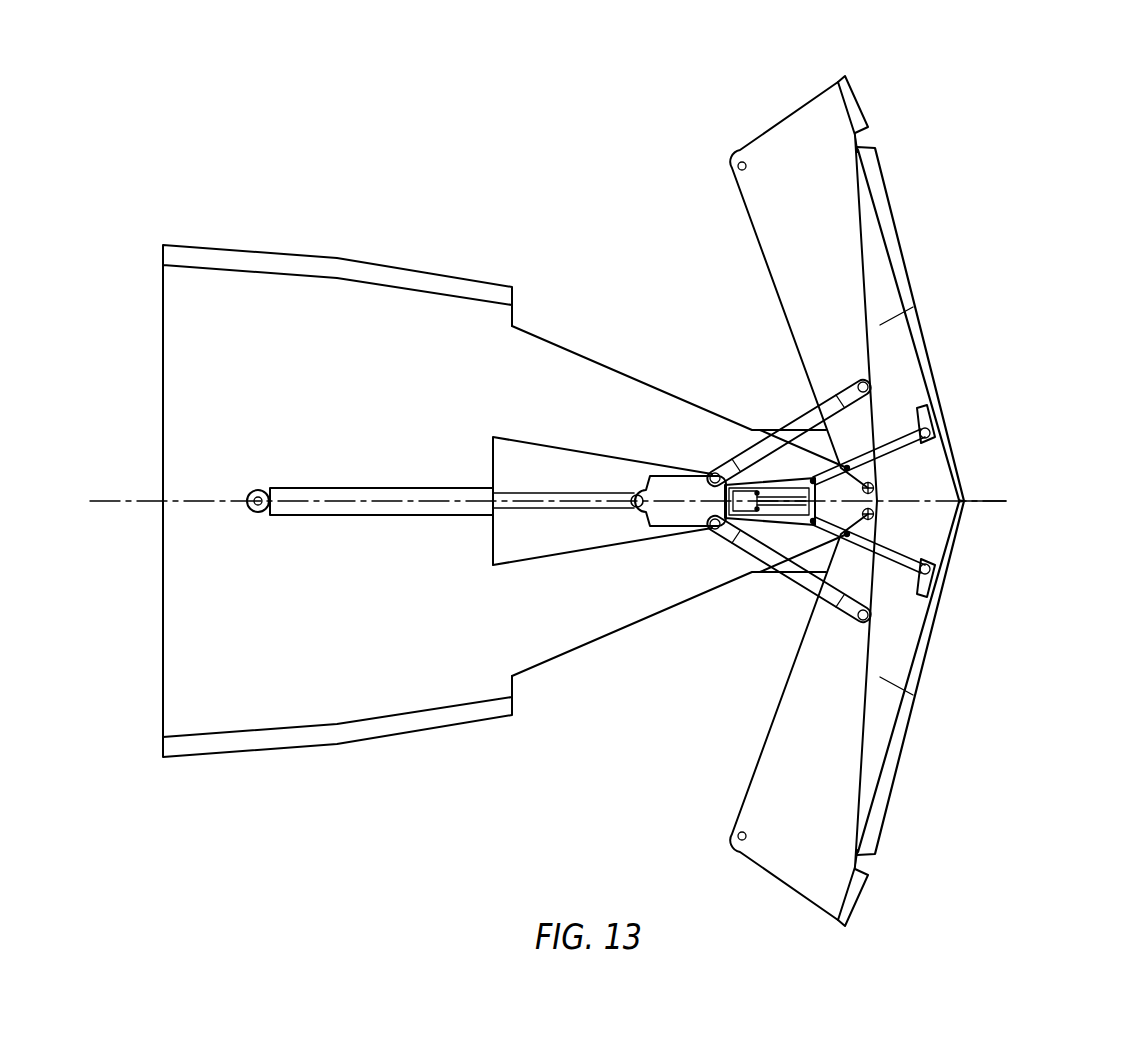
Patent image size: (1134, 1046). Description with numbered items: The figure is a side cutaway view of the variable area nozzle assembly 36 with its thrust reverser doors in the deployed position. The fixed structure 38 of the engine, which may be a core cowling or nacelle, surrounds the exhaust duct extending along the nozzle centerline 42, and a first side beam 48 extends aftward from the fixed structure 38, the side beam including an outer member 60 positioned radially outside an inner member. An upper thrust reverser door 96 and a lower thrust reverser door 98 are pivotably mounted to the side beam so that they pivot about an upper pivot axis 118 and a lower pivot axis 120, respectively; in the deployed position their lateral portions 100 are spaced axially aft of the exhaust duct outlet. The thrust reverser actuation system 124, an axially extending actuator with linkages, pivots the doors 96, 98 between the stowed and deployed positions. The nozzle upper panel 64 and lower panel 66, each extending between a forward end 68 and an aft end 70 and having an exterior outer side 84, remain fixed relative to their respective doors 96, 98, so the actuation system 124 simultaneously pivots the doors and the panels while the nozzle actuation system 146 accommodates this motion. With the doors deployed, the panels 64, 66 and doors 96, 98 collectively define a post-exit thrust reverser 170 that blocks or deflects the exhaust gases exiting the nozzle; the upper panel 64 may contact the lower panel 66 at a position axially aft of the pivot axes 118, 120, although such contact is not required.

The variable area nozzle assembly 36 is at (969, 147).
The fixed structure 38 is at (203, 422).
The nozzle centerline 42 is at (995, 505).
The first side beam 48 is at (541, 628).
The outer member 60 is at (668, 590).
The upper panel 64 is at (897, 252).
The lower panel 66 is at (924, 674).
The forward end 68 is at (886, 133).
The aft end 70 is at (970, 495).
The outer side 84 is at (934, 346).
The upper thrust reverser door 96 is at (796, 148).
The lower thrust reverser door 98 is at (802, 858).
The lateral portion 100 is at (847, 100).
The upper pivot axis 118 is at (877, 478).
The lower pivot axis 120 is at (878, 521).
The thrust reverser actuation system 124 is at (429, 534).
The nozzle actuation system 146 is at (780, 468).
The post-exit thrust reverser 170 is at (996, 400).